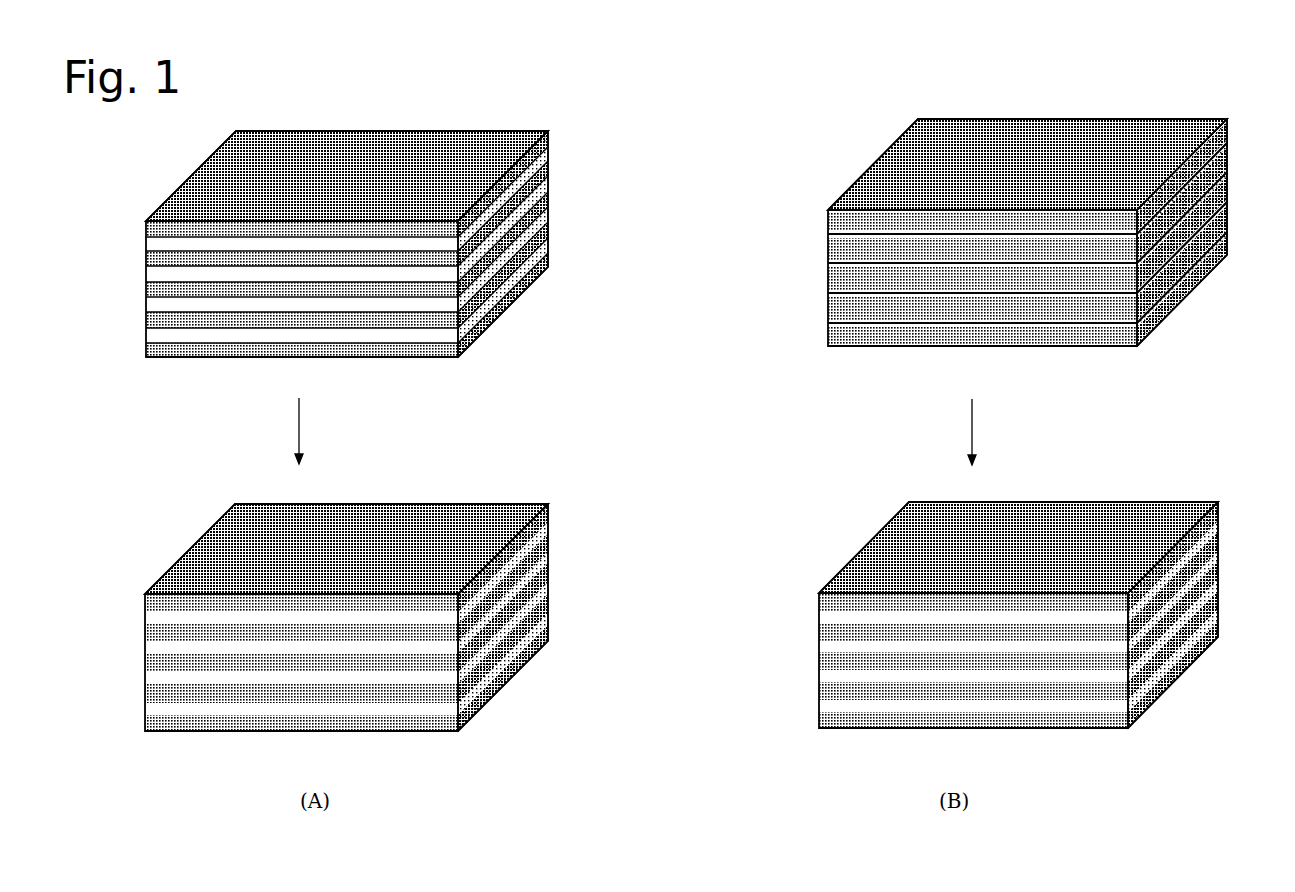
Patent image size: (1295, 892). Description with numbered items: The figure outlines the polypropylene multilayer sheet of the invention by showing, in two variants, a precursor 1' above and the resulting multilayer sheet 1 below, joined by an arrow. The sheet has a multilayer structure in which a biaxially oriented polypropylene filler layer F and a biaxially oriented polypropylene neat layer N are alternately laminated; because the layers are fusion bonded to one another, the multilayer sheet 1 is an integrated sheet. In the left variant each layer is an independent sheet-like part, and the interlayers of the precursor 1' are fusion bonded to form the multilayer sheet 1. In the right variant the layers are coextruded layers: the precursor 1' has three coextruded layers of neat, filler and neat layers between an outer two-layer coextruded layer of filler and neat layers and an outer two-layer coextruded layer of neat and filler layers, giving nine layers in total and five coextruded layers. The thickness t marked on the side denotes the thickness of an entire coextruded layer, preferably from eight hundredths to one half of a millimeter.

The multilayer sheet 1 is at (694, 616).
The precursor 1' is at (706, 257).
The neat layer N is at (156, 243).
The filler layer F is at (148, 263).
The thickness of the coextruded layer t is at (1236, 670).